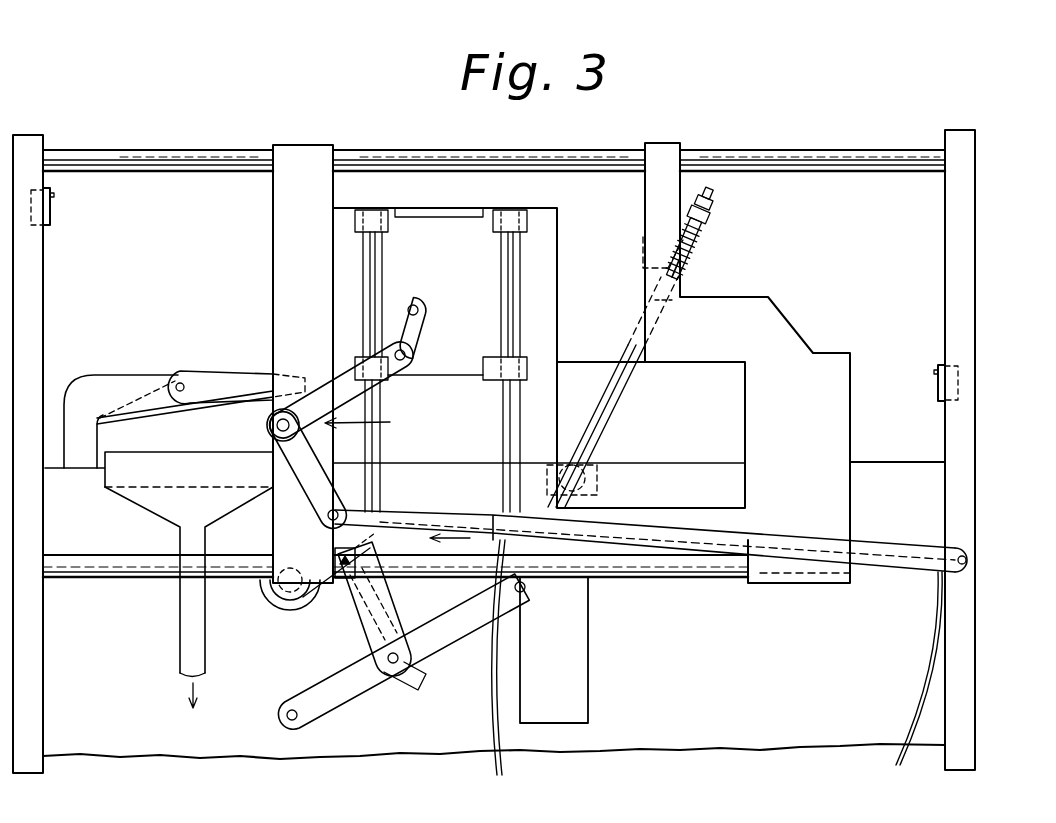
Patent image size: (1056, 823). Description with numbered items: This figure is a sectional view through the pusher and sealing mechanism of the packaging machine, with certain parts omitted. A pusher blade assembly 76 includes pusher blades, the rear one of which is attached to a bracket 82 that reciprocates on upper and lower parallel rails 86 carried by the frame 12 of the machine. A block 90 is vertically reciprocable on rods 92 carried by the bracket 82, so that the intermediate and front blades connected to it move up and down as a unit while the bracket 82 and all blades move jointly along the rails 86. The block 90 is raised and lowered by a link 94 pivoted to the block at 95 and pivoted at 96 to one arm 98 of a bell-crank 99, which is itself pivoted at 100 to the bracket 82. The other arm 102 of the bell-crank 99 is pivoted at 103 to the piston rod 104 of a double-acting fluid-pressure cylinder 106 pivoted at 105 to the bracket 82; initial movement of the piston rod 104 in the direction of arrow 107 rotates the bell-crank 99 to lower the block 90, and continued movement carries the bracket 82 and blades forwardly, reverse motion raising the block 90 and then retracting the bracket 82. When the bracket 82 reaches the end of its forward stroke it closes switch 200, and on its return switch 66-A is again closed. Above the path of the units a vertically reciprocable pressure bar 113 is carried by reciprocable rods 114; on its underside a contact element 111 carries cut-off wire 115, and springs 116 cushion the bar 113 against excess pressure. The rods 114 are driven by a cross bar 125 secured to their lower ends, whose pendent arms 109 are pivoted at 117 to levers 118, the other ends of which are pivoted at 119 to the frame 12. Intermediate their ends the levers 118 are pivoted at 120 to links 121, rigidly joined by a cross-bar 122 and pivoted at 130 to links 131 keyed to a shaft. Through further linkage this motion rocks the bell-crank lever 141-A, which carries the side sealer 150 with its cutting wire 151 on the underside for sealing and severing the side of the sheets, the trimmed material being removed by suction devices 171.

The frame 12 is at (965, 272).
The switch 66-A is at (936, 383).
The pusher blade assembly 76 is at (259, 219).
The bracket 82 is at (300, 326).
The rails 86 is at (800, 150).
The block 90 is at (455, 249).
The rods 92 is at (358, 297).
The link 94 is at (430, 326).
The pivot 95 is at (418, 310).
The pivot 96 is at (408, 355).
The arm 98 is at (330, 385).
The bell-crank 99 is at (373, 423).
The pivot 100 is at (276, 425).
The arm 102 is at (308, 474).
The pivot 103 is at (338, 510).
The piston rod 104 is at (645, 541).
The pivot 105 is at (968, 560).
The double-acting fluid-pressure cylinder 106 is at (770, 546).
The arrow 107 is at (460, 563).
The pendent arms 109 is at (524, 592).
The contact element 111 is at (642, 256).
The vertically reciprocable bar 113 is at (688, 268).
The reciprocable rods 114 is at (610, 408).
The cut-off wire 115 is at (652, 290).
The springs 116 is at (700, 240).
The pivot 117 is at (525, 612).
The levers 118 is at (418, 652).
The pivot 119 is at (290, 700).
The pivot 120 is at (412, 658).
The links 121 is at (380, 616).
The cross-bar 122 is at (352, 622).
The cross bar 125 is at (553, 545).
The pivot 130 is at (353, 562).
The links 131 is at (302, 598).
The bell-crank lever 141-A is at (108, 376).
The side sealer 150 is at (216, 382).
The cutting wire 151 is at (180, 420).
The suction devices 171 is at (152, 478).
The switch 200 is at (55, 212).